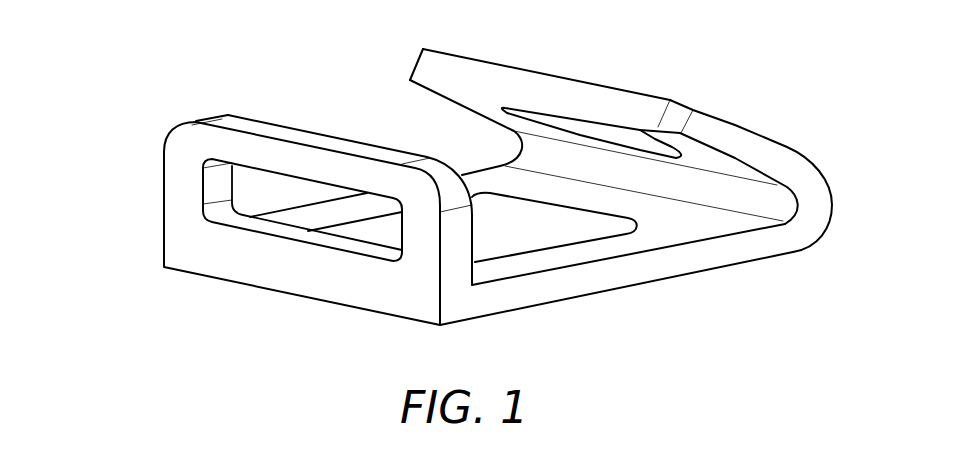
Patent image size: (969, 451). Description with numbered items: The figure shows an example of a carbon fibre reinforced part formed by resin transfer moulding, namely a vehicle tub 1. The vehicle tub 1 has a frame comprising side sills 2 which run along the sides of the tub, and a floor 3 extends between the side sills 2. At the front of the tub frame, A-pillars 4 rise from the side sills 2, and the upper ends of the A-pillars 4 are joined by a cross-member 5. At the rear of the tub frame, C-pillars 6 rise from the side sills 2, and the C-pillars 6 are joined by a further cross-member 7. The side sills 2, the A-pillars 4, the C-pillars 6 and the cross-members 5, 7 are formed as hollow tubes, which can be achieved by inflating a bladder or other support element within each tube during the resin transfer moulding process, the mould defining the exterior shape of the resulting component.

The vehicle tub 1 is at (721, 64).
The side sills 2 is at (477, 178).
The floor 3 is at (557, 233).
The A-pillars 4 is at (510, 124).
The cross-member 5 is at (620, 98).
The C-pillars 6 is at (175, 180).
The cross-member 7 is at (333, 165).